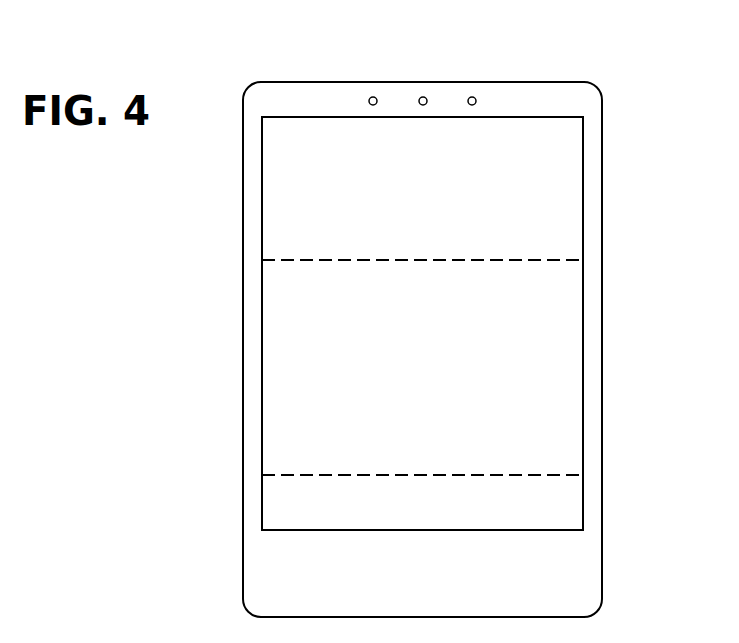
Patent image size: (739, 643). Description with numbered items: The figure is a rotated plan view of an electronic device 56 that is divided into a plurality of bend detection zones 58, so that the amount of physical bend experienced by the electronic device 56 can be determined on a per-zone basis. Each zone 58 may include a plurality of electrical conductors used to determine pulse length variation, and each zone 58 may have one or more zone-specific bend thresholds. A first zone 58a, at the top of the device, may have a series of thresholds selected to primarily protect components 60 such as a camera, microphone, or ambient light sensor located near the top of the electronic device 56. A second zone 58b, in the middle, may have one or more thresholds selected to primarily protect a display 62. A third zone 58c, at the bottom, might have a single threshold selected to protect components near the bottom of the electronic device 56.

The electronic device 56 is at (568, 82).
The bend detection zones 58 is at (235, 200).
The first zone 58a is at (425, 189).
The second zone 58b is at (425, 368).
The third zone 58c is at (423, 546).
The components 60 is at (348, 101).
The display 62 is at (583, 305).